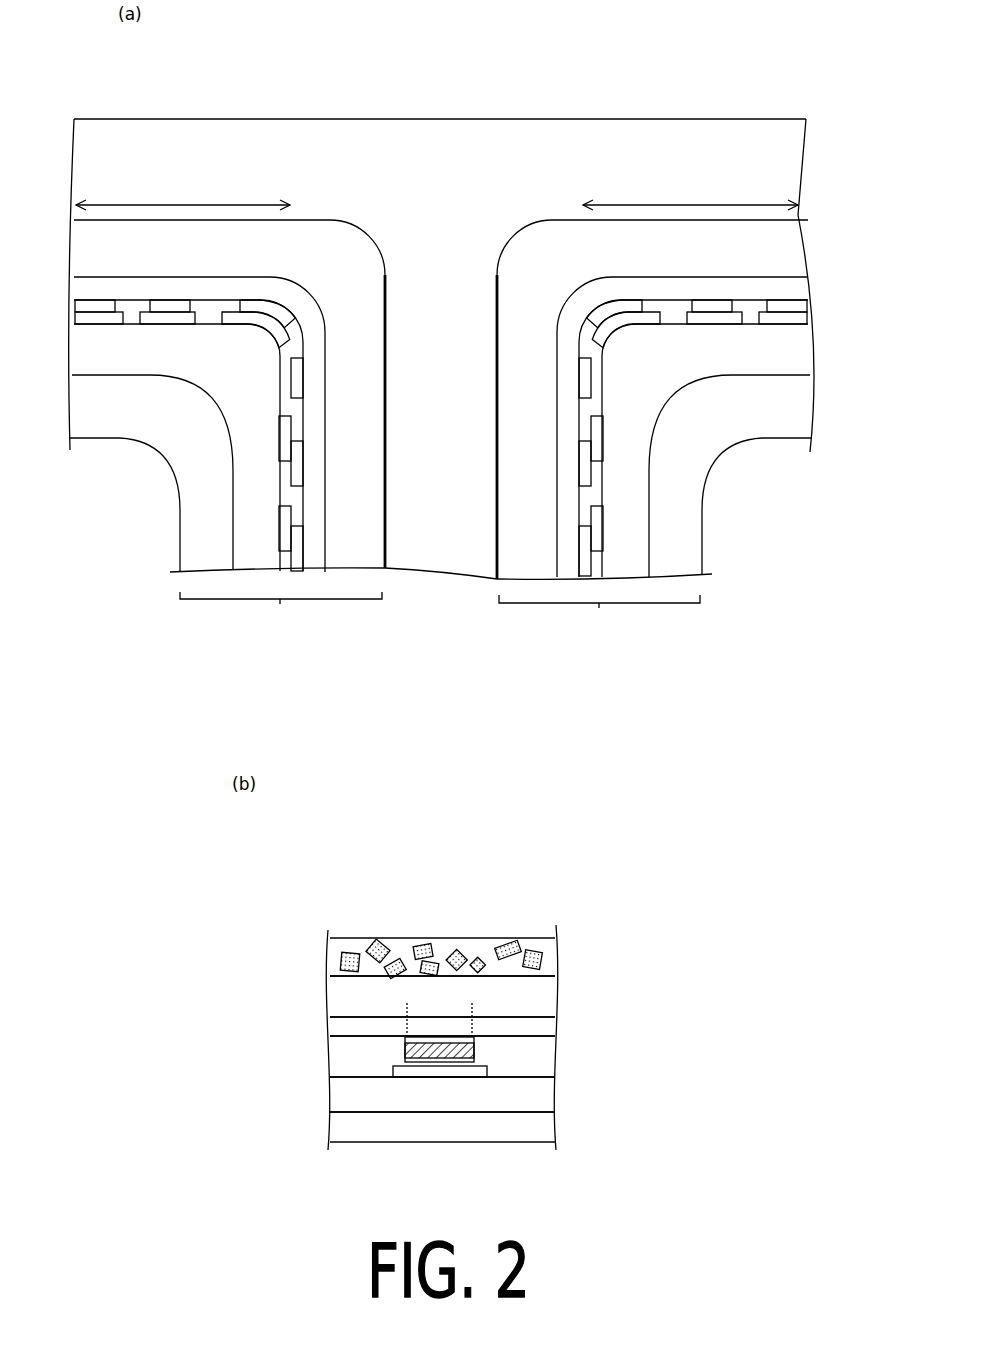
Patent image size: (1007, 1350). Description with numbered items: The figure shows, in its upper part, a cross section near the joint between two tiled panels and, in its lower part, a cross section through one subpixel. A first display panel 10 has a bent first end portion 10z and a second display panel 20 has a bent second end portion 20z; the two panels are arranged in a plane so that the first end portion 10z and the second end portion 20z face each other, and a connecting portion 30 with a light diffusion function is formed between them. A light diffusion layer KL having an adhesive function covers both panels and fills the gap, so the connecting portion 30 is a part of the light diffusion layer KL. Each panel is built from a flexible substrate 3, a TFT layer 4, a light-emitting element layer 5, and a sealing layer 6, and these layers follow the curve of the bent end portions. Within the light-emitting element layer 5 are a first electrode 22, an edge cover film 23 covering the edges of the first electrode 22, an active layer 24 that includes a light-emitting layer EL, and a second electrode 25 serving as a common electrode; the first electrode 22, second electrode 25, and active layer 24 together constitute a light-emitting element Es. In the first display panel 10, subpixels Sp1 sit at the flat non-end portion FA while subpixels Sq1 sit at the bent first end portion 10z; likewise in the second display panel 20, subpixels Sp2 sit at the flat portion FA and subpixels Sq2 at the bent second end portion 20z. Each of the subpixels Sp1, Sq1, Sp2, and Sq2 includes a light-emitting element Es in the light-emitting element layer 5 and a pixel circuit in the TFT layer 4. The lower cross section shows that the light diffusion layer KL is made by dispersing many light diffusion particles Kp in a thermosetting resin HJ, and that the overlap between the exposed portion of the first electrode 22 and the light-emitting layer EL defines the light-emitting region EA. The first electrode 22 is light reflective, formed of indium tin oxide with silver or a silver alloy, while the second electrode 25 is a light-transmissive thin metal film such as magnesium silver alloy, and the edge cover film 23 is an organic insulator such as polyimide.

The substrate 3 is at (82, 404).
The TFT layer 4 is at (82, 352).
The light-emitting element layer 5 is at (30, 279).
The sealing layer 6 is at (82, 238).
The first display panel 10 is at (116, 526).
The first end portion 10z is at (281, 615).
The second display panel 20 is at (780, 492).
The second end portion 20z is at (599, 618).
The first electrode 22 is at (100, 313).
The edge cover film 23 is at (131, 313).
The active layer 24 is at (82, 312).
The second electrode 25 is at (82, 289).
The connecting portion 30 is at (442, 462).
The light diffusion layer KL is at (458, 112).
The non-end portion FA is at (134, 205).
The subpixel Sp1 is at (98, 283).
The subpixel Sq1 is at (312, 380).
The subpixel Sp2 is at (628, 290).
The subpixel Sq2 is at (570, 381).
The light diffusion particles Kp is at (377, 950).
The thermosetting resin HJ is at (472, 948).
The light-emitting element Es is at (483, 1028).
The light-emitting region EA is at (470, 1010).
The light-emitting layer EL is at (458, 1055).